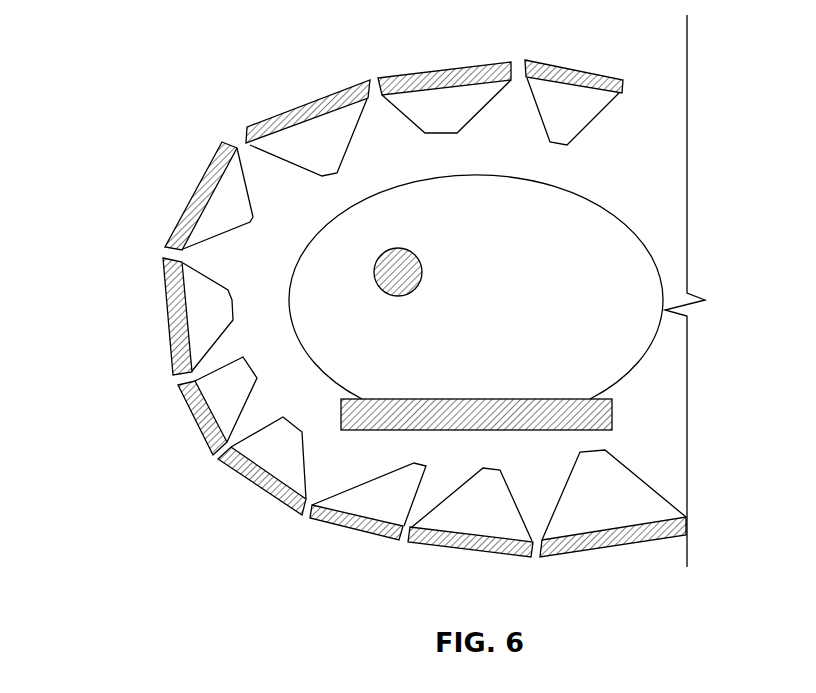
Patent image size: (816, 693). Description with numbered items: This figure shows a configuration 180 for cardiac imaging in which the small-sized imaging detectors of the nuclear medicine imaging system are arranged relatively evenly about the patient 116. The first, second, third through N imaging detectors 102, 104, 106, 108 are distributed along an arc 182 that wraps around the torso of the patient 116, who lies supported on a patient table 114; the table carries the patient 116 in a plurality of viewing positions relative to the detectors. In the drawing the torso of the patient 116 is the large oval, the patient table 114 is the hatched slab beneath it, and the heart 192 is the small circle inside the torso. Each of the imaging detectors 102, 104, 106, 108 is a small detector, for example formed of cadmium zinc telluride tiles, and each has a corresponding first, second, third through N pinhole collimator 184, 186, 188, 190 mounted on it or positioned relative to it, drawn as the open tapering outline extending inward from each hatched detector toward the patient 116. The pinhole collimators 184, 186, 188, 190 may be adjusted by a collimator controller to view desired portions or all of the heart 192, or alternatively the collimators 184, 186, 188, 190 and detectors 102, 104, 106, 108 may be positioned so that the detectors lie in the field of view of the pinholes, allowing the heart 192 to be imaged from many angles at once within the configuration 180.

The configuration 180 is at (162, 33).
The arc 182 is at (468, 47).
The first imaging detector 102 is at (575, 70).
The second imaging detector 104 is at (448, 72).
The third imaging detector 106 is at (310, 107).
The Nth imaging detector 108 is at (192, 195).
The first pinhole collimator 184 is at (577, 108).
The second pinhole collimator 186 is at (458, 112).
The third pinhole collimator 188 is at (330, 150).
The Nth pinhole collimator 190 is at (235, 188).
The patient table 114 is at (612, 412).
The patient 116 is at (661, 284).
The heart 192 is at (422, 268).